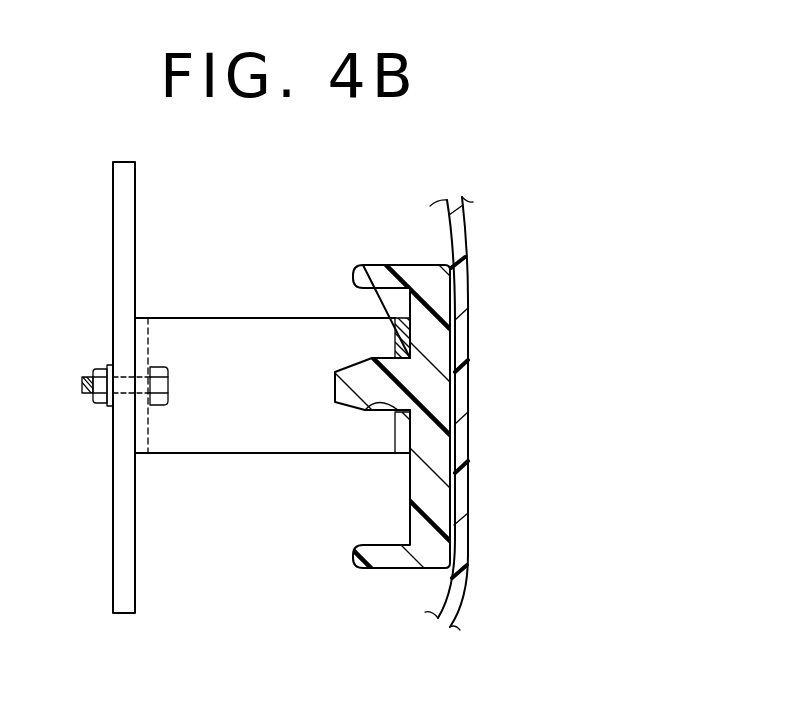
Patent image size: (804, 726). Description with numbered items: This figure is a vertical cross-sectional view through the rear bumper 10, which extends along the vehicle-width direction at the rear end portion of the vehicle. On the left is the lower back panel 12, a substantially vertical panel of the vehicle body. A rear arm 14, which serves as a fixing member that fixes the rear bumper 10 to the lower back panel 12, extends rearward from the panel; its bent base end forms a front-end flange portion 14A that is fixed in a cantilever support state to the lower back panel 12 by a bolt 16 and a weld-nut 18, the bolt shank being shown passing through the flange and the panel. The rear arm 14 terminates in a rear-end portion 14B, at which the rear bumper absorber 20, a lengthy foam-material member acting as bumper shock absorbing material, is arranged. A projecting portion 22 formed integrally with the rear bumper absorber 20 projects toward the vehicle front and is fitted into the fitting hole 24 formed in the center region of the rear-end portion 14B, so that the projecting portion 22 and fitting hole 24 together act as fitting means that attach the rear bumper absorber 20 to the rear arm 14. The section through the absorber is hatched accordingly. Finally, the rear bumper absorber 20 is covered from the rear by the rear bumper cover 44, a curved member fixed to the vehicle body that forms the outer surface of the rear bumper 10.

The rear bumper 10 is at (518, 295).
The lower back panel 12 is at (135, 219).
The rear arm 14 is at (280, 317).
The front-end flange portion 14A is at (143, 437).
The rear-end portion 14B is at (397, 432).
The bolt 16 is at (83, 380).
The weld-nut 18 is at (103, 405).
The rear bumper absorber 20 is at (375, 570).
The projecting portion 22 is at (337, 388).
The fitting hole 24 is at (362, 412).
The rear bumper cover 44 is at (470, 478).